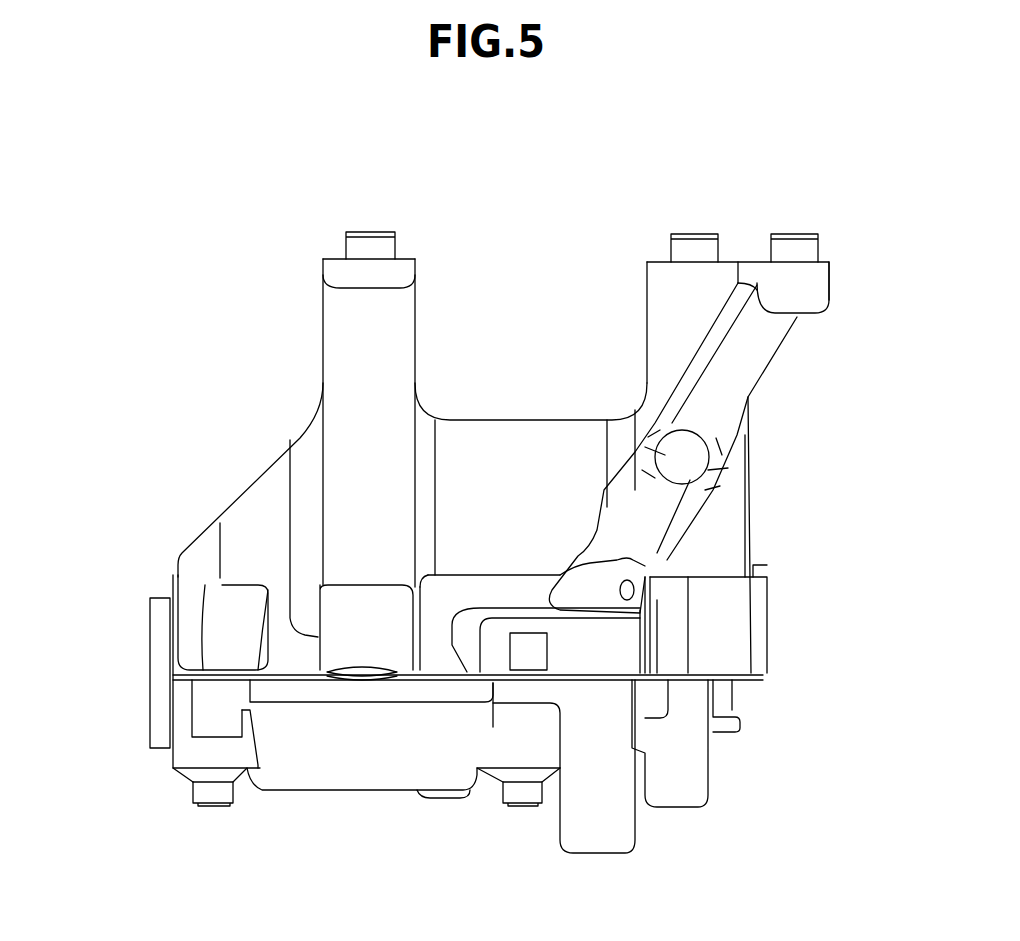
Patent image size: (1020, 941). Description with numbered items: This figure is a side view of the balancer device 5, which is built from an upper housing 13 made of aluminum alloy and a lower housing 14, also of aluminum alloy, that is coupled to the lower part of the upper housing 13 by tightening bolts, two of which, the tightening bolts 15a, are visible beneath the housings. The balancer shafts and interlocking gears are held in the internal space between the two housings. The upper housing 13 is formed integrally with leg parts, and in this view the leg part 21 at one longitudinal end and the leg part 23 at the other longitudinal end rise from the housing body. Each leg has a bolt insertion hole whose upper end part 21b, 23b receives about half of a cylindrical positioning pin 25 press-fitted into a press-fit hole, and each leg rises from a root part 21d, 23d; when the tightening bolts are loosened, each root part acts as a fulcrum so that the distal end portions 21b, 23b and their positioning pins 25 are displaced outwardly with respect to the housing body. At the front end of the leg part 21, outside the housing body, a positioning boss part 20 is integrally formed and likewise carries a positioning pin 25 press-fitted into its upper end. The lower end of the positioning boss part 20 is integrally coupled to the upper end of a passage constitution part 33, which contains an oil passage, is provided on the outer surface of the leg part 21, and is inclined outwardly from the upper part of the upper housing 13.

The balancer device 5 is at (135, 676).
The upper housing 13 is at (738, 608).
The lower housing 14 is at (688, 758).
The tightening bolt 15a is at (211, 807).
The positioning boss part 20 is at (818, 278).
The leg part 21 is at (680, 315).
The upper end part of bolt insertion hole 21b is at (662, 280).
The root part 21d is at (720, 535).
The leg part 23 is at (345, 329).
The upper end part of bolt insertion hole 23b is at (392, 277).
The root part 23d is at (350, 505).
The positioning pin 25 is at (370, 248).
The passage constitution part 33 is at (735, 380).